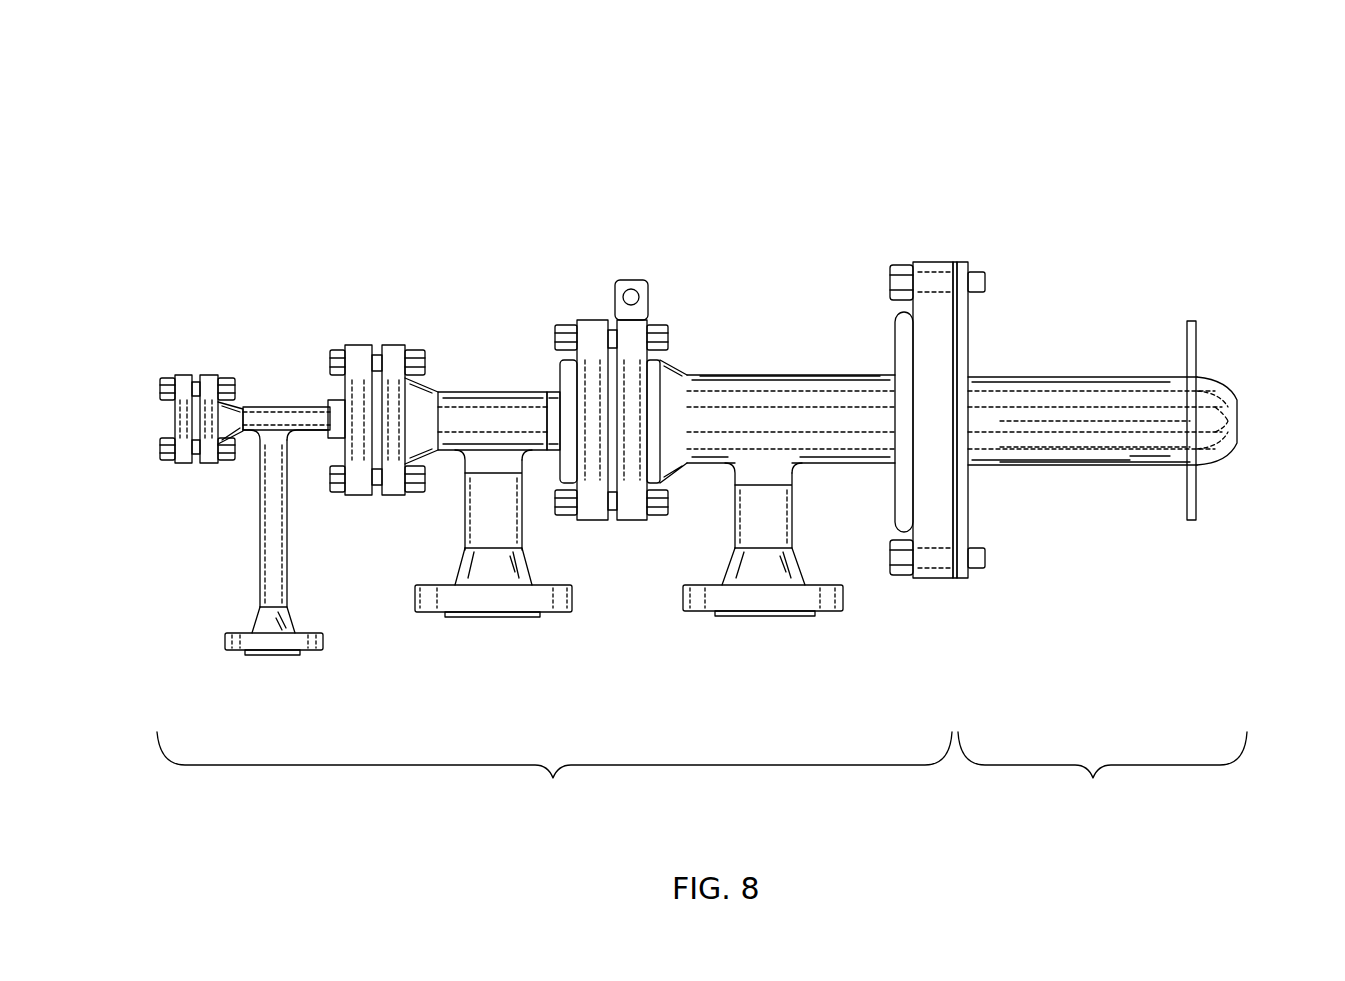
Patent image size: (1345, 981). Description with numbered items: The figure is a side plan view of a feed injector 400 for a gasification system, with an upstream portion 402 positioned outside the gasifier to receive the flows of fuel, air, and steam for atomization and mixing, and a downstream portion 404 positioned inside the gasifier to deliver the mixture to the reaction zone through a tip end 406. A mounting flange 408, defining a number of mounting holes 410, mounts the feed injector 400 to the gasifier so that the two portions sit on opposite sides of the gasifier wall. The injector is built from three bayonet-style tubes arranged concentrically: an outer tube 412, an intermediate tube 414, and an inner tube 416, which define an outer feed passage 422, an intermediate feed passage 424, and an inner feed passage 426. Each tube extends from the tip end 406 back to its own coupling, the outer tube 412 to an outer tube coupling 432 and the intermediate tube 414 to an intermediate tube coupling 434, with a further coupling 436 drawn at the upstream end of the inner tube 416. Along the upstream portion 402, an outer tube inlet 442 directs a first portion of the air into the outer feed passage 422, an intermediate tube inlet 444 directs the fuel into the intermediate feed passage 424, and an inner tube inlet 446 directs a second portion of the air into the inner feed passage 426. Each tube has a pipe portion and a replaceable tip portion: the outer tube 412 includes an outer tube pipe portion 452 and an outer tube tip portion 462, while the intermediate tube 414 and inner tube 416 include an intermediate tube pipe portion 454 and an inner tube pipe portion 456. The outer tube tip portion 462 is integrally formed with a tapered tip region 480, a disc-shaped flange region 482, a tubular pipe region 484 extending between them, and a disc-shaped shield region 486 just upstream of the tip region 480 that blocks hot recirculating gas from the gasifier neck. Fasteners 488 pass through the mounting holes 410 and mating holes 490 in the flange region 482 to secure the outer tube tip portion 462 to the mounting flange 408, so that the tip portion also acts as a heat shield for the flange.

The feed injector 400 is at (215, 84).
The upstream portion 402 is at (553, 778).
The downstream portion 404 is at (1093, 778).
The tip end 406 is at (1250, 418).
The mounting flange 408 is at (934, 416).
The mounting holes 410 is at (944, 262).
The outer tube 412 is at (772, 377).
The intermediate tube 414 is at (515, 393).
The inner tube 416 is at (322, 409).
The outer feed passage 422 is at (1057, 458).
The intermediate feed passage 424 is at (1083, 440).
The inner feed passage 426 is at (1097, 425).
The outer tube coupling 432 is at (597, 309).
The intermediate tube coupling 434 is at (375, 334).
The flange connection 436 is at (192, 362).
The outer tube inlet 442 is at (740, 611).
The intermediate tube inlet 444 is at (465, 612).
The inner tube inlet 446 is at (262, 653).
The outer tube pipe portion 452 is at (838, 374).
The intermediate tube pipe portion 454 is at (545, 393).
The inner tube pipe portion 456 is at (325, 407).
The outer tube tip portion 462 is at (1175, 291).
The tip region 480 is at (1222, 385).
The flange region 482 is at (970, 330).
The pipe region 484 is at (1040, 378).
The shield region 486 is at (1197, 350).
The fasteners 488 is at (874, 640).
The mating holes 490 is at (966, 264).